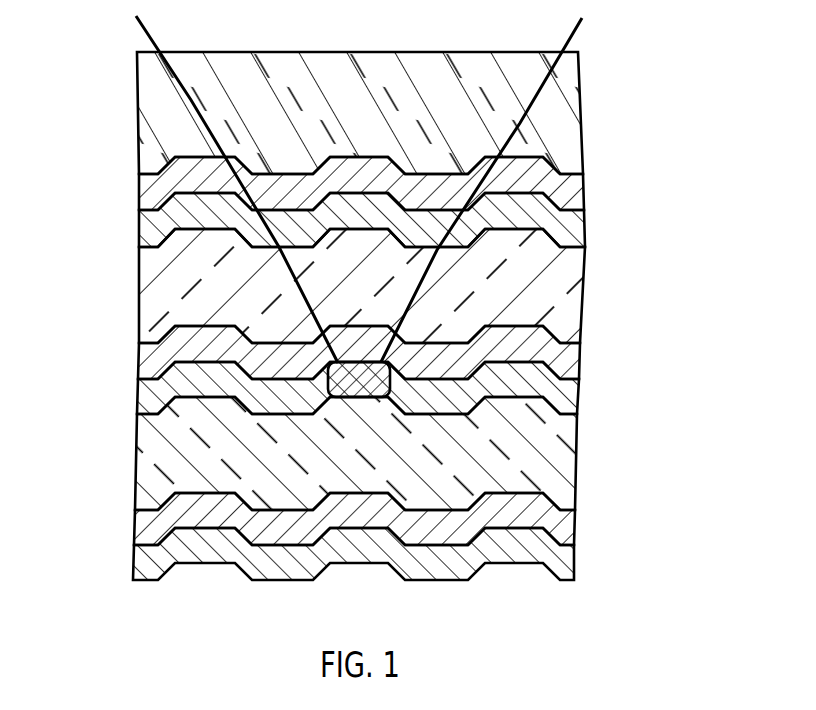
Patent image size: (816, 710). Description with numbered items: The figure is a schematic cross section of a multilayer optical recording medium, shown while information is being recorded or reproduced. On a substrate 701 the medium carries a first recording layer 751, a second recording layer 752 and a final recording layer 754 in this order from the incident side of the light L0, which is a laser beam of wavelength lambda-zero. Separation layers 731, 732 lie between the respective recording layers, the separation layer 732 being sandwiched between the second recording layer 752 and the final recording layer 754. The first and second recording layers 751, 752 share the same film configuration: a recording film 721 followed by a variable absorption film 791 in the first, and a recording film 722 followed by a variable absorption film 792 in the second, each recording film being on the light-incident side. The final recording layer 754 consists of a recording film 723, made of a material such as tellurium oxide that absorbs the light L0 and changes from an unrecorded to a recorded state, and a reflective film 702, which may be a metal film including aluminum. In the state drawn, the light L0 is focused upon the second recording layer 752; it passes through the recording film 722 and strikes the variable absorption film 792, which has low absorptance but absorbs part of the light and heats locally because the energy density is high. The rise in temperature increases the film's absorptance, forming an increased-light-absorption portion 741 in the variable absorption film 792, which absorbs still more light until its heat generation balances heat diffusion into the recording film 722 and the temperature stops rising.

The substrate 701 is at (579, 83).
The reflective film 702 is at (574, 568).
The recording film 721 is at (583, 190).
The recording film 722 is at (580, 360).
The recording film 723 is at (575, 523).
The separation layer 731 is at (584, 271).
The separation layer 732 is at (577, 457).
The increased-light-absorption portion 741 is at (332, 360).
The first recording layer 751 is at (365, 202).
The second recording layer 752 is at (365, 370).
The final recording layer 754 is at (365, 536).
The variable absorption film 791 is at (584, 233).
The variable absorption film 792 is at (579, 398).
The light L0 is at (583, 23).